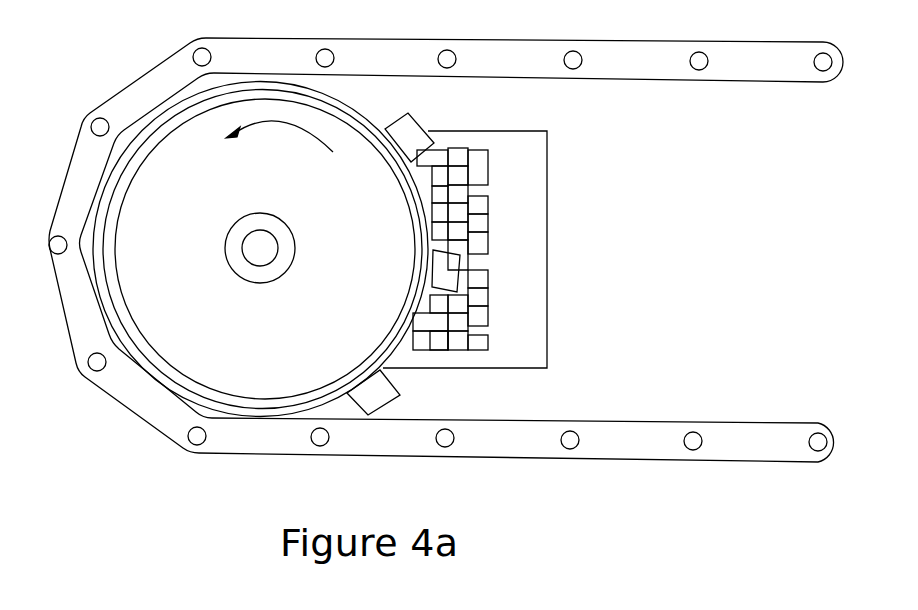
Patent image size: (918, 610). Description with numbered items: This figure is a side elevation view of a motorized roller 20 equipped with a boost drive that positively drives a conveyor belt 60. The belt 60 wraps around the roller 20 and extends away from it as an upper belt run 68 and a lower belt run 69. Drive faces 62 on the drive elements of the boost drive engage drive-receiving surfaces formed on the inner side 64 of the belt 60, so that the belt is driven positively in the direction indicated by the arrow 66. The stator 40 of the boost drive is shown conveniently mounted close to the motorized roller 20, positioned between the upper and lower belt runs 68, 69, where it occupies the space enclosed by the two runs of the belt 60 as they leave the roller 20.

The motorized roller 20 is at (178, 360).
The stator 40 is at (536, 288).
The conveyor belt 60 is at (507, 46).
The drive faces 62 is at (405, 115).
The inner side of the belt 64 is at (656, 82).
The arrow 66 is at (282, 121).
The upper belt run 68 is at (752, 72).
The lower belt run 69 is at (614, 447).